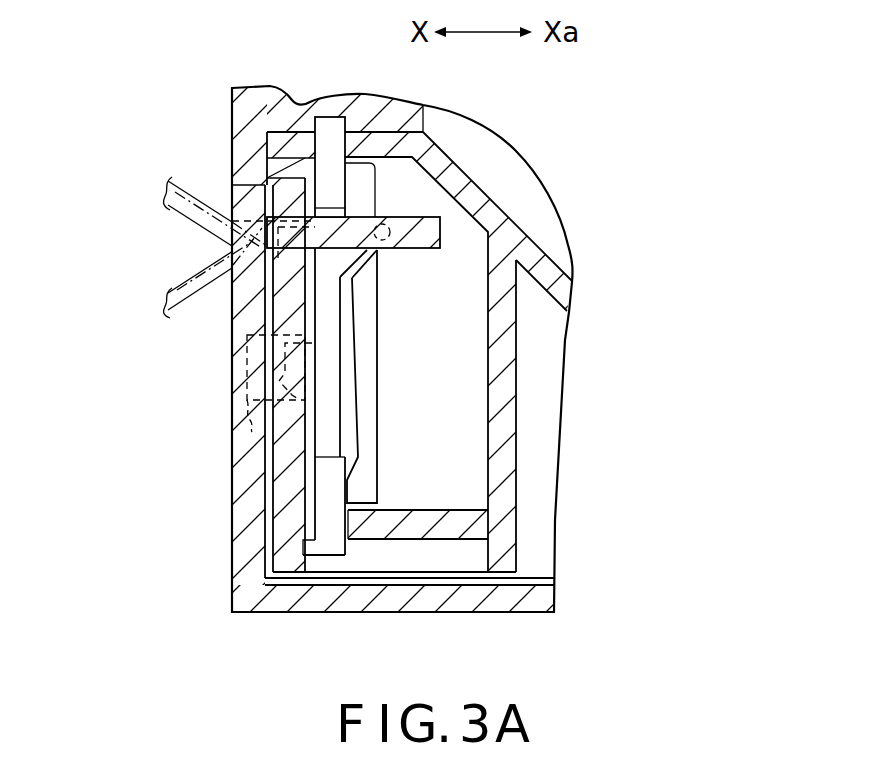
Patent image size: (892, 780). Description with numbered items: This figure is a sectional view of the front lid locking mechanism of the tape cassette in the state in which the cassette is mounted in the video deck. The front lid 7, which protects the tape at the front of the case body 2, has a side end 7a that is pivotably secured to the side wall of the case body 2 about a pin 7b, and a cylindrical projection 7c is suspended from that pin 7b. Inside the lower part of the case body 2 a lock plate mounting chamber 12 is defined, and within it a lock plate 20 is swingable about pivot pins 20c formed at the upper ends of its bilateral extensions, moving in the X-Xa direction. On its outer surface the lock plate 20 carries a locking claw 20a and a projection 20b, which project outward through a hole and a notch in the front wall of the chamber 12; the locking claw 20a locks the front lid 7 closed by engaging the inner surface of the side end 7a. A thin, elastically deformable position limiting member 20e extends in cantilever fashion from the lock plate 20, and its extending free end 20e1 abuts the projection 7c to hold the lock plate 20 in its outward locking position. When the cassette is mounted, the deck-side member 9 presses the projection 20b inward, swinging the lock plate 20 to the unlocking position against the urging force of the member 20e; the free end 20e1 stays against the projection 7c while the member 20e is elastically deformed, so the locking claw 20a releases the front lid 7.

The case body 2 is at (590, 272).
The front lid 7 is at (503, 622).
The side end of front lid 7a is at (232, 521).
The pin 7b is at (437, 213).
The cylindrical projection 7c is at (405, 142).
The member for operating the front lid locking mechanism 9 is at (183, 283).
The lock plate mounting chamber 12 is at (400, 507).
The lock plate 20 is at (327, 130).
The locking claw 20a is at (252, 428).
The projection 20b is at (245, 337).
The pivot pin 20c is at (332, 543).
The position limiting member 20e is at (357, 367).
The extending free end of position limiting member 20e1 is at (367, 257).